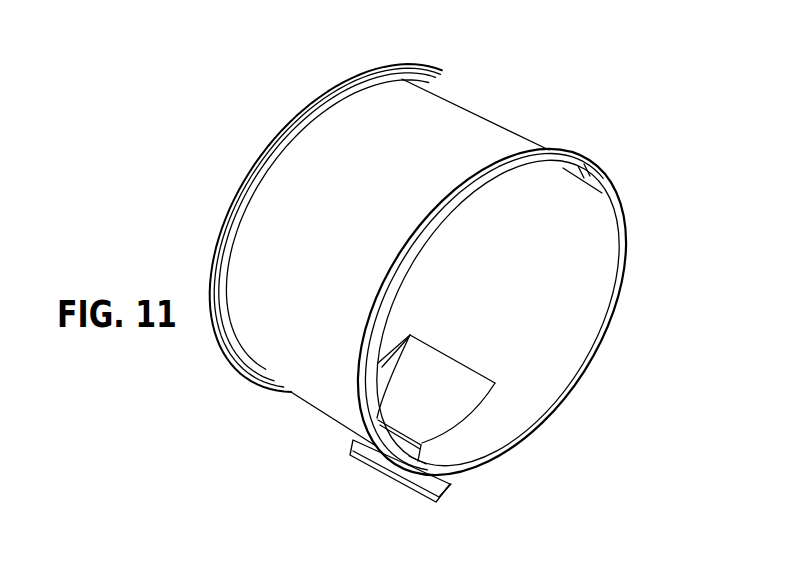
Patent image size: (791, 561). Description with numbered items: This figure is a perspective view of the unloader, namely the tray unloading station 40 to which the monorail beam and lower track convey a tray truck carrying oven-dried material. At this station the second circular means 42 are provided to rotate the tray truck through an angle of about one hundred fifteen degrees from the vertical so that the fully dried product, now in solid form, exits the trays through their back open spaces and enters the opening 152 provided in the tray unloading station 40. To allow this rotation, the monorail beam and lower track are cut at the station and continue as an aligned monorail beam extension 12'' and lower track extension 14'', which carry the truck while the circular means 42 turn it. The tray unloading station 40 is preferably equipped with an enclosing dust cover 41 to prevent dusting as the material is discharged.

The tray unloading station 40 is at (501, 117).
The enclosing dust cover 41 is at (318, 397).
The circular means 42 is at (374, 80).
The opening 152 is at (443, 383).
The monorail beam extension 12'' is at (493, 441).
The lower track extension 14'' is at (626, 161).